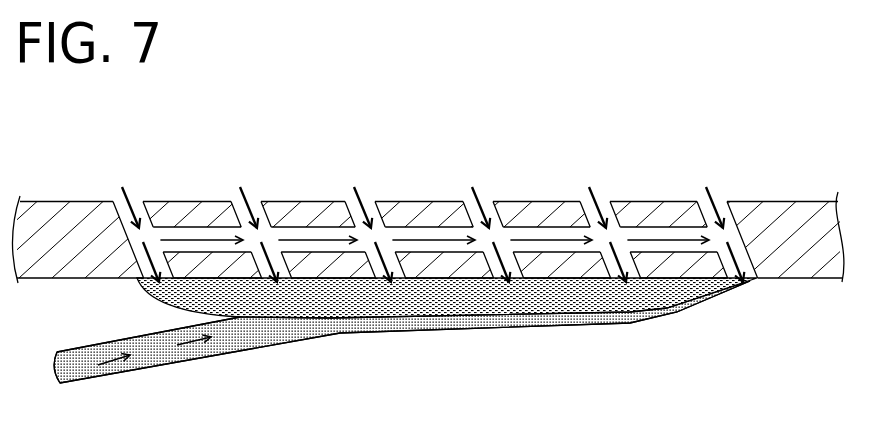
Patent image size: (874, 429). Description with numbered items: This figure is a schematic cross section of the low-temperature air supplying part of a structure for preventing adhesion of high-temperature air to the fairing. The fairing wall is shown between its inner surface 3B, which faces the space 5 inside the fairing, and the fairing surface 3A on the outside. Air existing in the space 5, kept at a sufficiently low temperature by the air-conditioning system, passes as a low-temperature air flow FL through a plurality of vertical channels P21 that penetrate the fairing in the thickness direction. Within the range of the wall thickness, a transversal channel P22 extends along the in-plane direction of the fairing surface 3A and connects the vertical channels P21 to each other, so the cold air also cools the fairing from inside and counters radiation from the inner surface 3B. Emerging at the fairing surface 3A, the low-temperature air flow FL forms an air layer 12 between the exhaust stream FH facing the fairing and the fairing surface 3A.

The space 5 is at (486, 108).
The fairing surface 3A is at (790, 280).
The inner surface 3B is at (795, 197).
The vertical channels P21 is at (118, 200).
The transversal channel P22 is at (350, 237).
The air layer 12 is at (473, 310).
The low-temperature air flow FL is at (422, 193).
The exhaust stream FH is at (402, 337).